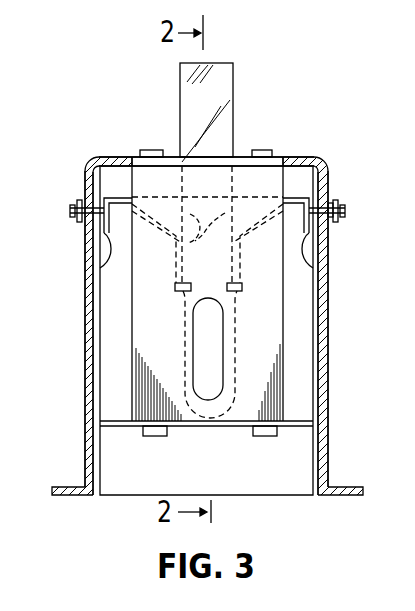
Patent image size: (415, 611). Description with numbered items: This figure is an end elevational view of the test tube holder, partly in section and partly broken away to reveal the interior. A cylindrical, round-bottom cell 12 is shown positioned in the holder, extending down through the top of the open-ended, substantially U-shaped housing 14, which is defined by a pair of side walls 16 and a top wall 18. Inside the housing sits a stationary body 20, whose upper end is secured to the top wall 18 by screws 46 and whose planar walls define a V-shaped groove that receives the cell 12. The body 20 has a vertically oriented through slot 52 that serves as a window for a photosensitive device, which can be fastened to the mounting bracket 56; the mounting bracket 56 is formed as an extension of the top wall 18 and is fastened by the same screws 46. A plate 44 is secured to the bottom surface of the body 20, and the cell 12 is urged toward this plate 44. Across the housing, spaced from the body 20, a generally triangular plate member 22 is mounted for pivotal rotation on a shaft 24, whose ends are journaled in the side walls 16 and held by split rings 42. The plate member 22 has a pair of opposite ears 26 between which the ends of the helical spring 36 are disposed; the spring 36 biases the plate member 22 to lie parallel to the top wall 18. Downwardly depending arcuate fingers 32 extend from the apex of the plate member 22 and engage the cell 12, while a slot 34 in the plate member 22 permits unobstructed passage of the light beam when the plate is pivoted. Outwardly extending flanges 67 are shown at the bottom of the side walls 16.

The cell 12 is at (222, 93).
The housing 14 is at (108, 154).
The side walls 16 is at (323, 360).
The top wall 18 is at (118, 166).
The stationary body 20 is at (275, 272).
The plate member 22 is at (276, 204).
The shaft 24 is at (68, 210).
The ears 26 is at (308, 252).
The fingers 32 is at (176, 293).
The slot 34 is at (197, 238).
The spring 36 is at (290, 198).
The split rings 42 is at (82, 223).
The plate 44 is at (194, 428).
The screws 46 is at (155, 150).
The through slot 52 is at (218, 378).
The mounting bracket 56 is at (293, 156).
The flange 67 is at (68, 486).